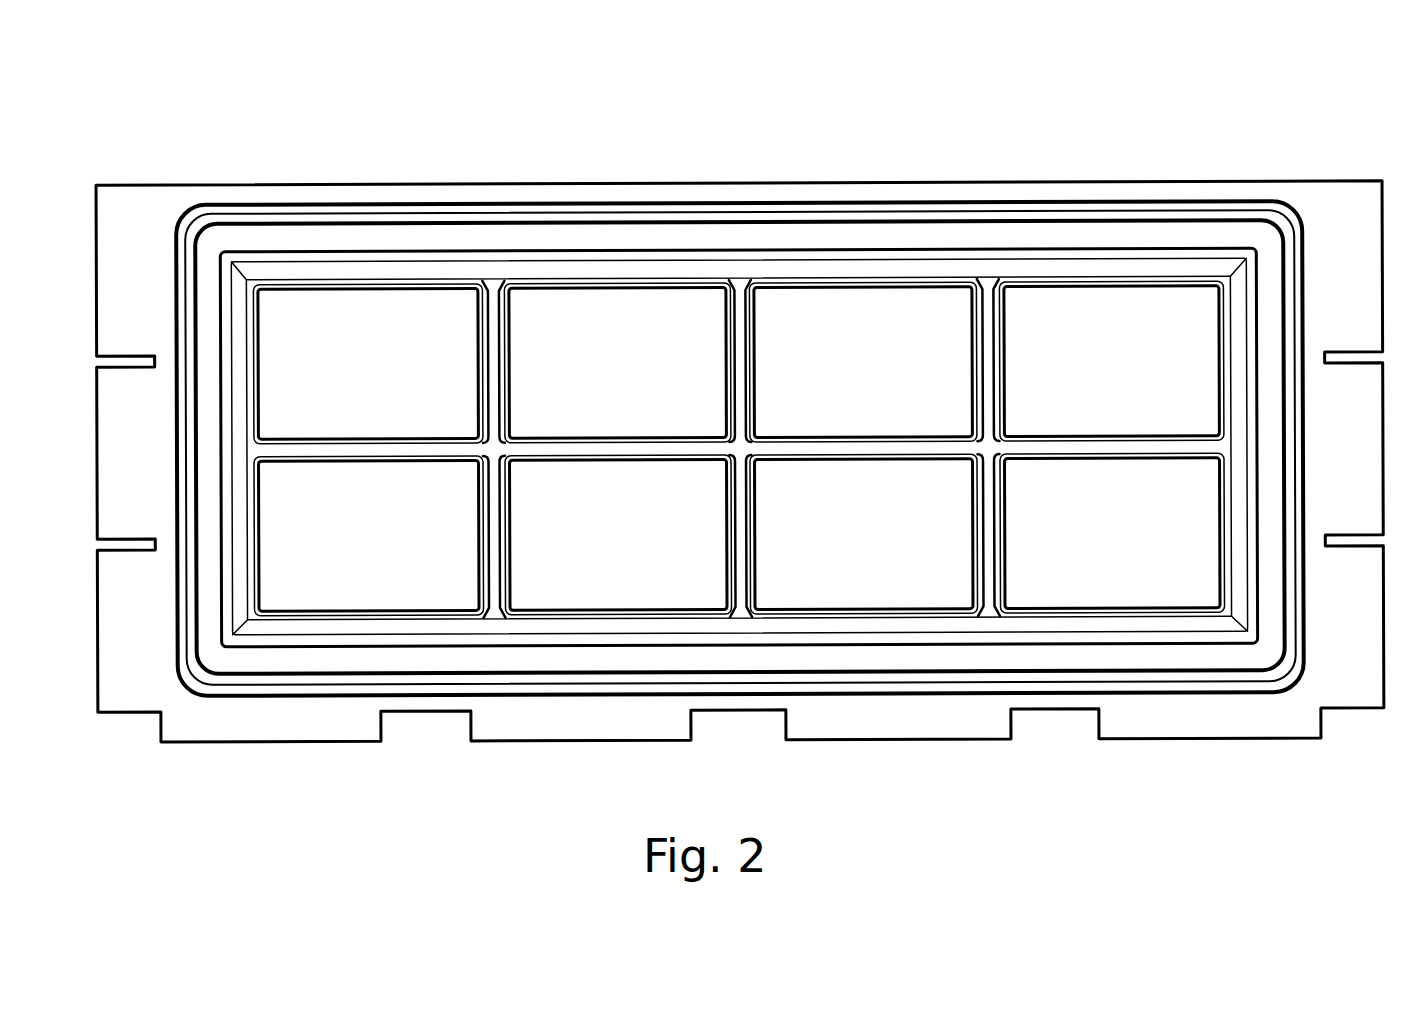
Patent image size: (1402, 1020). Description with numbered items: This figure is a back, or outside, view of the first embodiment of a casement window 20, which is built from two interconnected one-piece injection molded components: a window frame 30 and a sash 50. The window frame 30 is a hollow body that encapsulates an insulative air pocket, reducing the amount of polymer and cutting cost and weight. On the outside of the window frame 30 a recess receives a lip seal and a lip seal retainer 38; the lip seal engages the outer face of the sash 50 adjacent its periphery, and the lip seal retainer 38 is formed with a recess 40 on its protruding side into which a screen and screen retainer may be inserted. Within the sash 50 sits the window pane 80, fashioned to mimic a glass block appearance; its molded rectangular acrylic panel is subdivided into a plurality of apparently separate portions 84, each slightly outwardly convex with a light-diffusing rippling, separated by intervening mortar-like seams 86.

The casement window 20 is at (838, 85).
The window frame 30 is at (1137, 178).
The lip seal retainer 38 is at (583, 205).
The recess 40 is at (724, 216).
The sash 50 is at (322, 230).
The window pane 80 is at (537, 278).
The apparently separate portions 84 is at (402, 386).
The mortar-like seams 86 is at (798, 435).